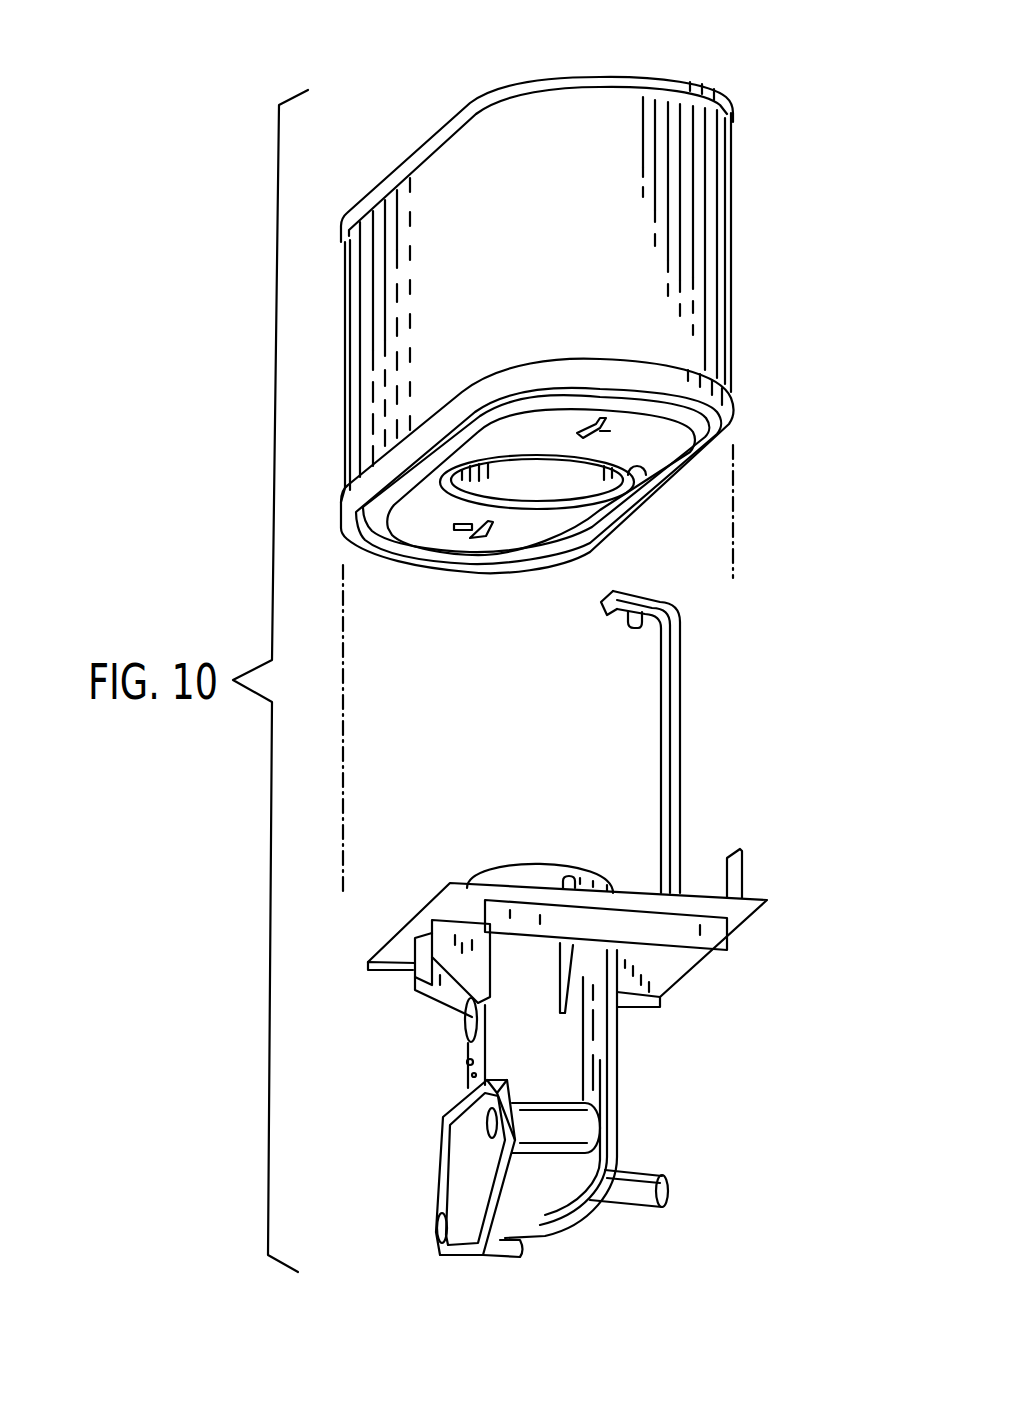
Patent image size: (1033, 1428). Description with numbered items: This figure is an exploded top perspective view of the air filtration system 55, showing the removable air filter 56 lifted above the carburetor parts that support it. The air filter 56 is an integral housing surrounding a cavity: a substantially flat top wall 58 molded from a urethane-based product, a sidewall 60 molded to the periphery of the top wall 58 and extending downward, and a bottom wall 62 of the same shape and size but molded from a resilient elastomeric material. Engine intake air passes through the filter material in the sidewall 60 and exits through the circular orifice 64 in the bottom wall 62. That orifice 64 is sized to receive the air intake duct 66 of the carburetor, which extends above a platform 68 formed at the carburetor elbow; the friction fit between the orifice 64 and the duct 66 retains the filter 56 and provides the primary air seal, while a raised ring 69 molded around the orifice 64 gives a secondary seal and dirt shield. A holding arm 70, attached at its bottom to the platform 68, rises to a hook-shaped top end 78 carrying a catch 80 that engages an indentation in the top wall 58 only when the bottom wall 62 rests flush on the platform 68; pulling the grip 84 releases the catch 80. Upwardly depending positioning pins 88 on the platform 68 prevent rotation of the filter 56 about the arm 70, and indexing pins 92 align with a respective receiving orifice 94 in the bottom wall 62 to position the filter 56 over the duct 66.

The air filtration system 55 is at (707, 55).
The air filter 56 is at (598, 176).
The top wall 58 is at (716, 98).
The sidewall 60 is at (720, 210).
The bottom wall 62 is at (736, 402).
The orifice 64 is at (589, 507).
The air intake duct 66 is at (618, 1055).
The platform 68 is at (456, 912).
The raised ring 69 is at (641, 470).
The holding arm 70 is at (683, 762).
The top end 78 is at (672, 610).
The catch 80 is at (635, 629).
The grip 84 is at (614, 592).
The positioning pins 88 is at (745, 870).
The indexing pins 92 is at (570, 878).
The receiving orifice 94 is at (607, 428).